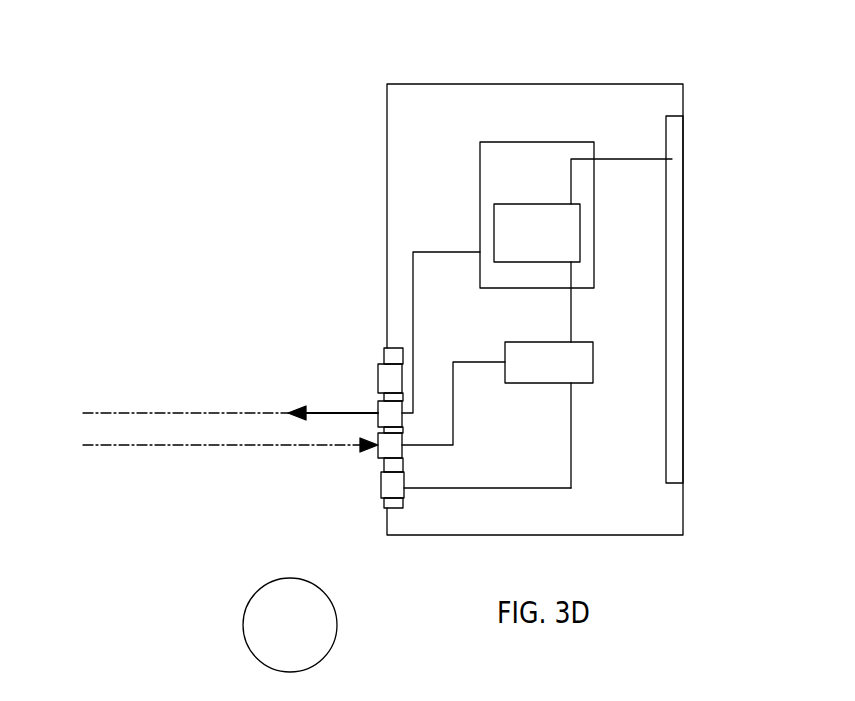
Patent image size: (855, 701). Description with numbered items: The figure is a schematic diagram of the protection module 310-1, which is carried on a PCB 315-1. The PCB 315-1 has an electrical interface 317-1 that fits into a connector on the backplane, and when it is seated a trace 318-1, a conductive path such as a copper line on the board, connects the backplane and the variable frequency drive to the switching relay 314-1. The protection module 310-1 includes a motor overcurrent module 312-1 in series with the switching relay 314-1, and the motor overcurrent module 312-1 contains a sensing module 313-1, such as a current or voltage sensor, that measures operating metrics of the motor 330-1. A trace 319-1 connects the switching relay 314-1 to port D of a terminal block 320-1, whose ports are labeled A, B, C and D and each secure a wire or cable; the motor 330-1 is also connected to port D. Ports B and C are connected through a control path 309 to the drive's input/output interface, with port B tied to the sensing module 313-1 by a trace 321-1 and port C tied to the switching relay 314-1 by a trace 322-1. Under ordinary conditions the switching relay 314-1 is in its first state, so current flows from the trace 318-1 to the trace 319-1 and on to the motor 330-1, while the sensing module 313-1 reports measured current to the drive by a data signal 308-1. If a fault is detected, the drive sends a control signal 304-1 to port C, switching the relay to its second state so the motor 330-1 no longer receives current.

The protection module 310-1 is at (555, 51).
The PCB 315-1 is at (535, 309).
The electrical interface 317-1 is at (676, 138).
The trace 318-1 is at (633, 160).
The motor overcurrent module 312-1 is at (537, 215).
The sensing module 313-1 is at (537, 233).
The switching relay 314-1 is at (549, 362).
The trace 321-1 is at (438, 252).
The terminal block 320-1 is at (396, 355).
The control path 309 is at (165, 412).
The data signal 308-1 is at (333, 399).
The control signal 304-1 is at (339, 458).
The trace 322-1 is at (453, 392).
The trace 319-1 is at (545, 488).
The motor 330-1 is at (380, 487).